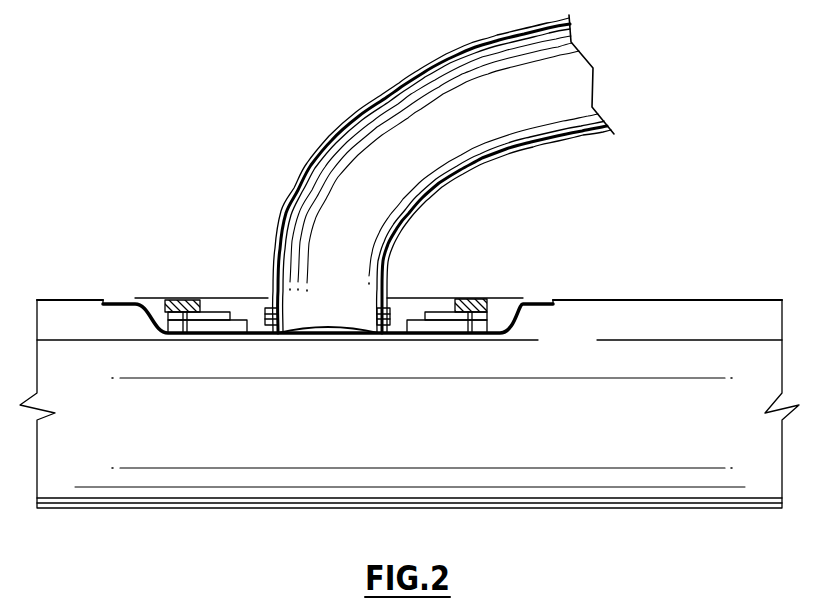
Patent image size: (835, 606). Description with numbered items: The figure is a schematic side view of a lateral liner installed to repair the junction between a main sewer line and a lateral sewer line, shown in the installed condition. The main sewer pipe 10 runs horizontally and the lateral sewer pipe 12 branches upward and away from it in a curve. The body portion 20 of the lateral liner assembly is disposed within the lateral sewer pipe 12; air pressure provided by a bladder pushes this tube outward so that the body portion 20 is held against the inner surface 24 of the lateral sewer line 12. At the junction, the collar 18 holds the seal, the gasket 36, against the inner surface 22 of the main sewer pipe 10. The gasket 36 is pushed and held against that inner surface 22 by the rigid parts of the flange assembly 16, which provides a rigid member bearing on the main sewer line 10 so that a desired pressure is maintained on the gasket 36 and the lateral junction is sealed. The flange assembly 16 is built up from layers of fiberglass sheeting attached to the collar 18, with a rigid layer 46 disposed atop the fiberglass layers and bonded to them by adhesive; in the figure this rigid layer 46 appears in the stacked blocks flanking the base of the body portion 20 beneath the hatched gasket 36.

The main sewer pipe 10 is at (703, 306).
The lateral sewer pipe 12 is at (493, 173).
The flange assembly 16 is at (435, 369).
The collar 18 is at (543, 304).
The body portion 20 is at (388, 268).
The inner surface of the main sewer pipe 22 is at (646, 313).
The inner surface of the lateral sewer line 24 is at (347, 184).
The gasket 36 is at (480, 299).
The rigid layer 46 is at (417, 323).